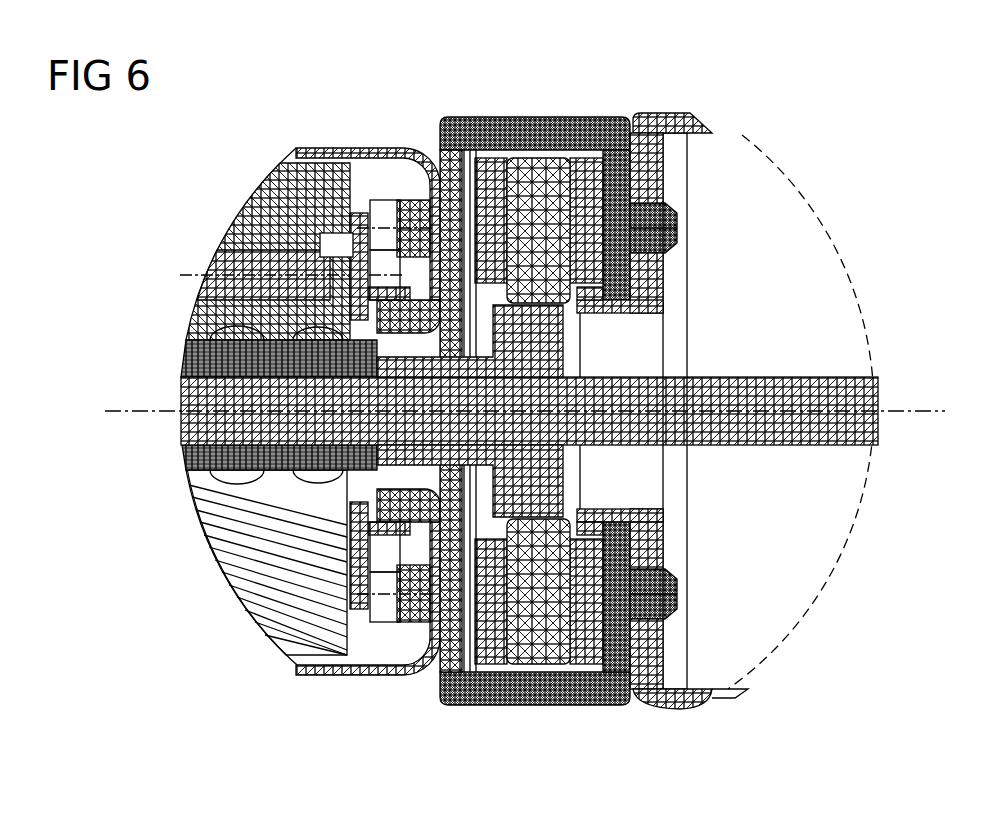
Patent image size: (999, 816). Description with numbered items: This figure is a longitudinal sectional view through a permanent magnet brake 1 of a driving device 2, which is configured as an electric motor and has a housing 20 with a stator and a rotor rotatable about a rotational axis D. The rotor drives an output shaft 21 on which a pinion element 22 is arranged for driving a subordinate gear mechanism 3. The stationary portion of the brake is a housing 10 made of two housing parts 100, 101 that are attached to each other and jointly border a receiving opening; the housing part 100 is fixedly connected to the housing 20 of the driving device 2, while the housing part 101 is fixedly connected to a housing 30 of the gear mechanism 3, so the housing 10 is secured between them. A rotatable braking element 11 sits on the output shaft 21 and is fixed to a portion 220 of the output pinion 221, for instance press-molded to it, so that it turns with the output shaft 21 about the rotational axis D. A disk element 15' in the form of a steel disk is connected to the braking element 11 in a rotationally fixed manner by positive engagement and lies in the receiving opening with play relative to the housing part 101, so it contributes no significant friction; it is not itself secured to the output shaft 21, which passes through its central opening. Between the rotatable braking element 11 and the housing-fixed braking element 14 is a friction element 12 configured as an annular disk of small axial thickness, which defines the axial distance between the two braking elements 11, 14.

The permanent magnet brake 1 is at (545, 353).
The driving device 2 is at (822, 195).
The gear mechanism 3 is at (267, 410).
The housing 10 is at (545, 361).
The braking element 11 is at (557, 177).
The friction element 12 is at (660, 170).
The braking element 14 is at (628, 122).
The disk element 15' is at (485, 364).
The housing 20 is at (697, 695).
The output shaft 21 is at (853, 383).
The pinion element 22 is at (213, 350).
The housing 30 is at (347, 675).
The housing part 100 is at (601, 117).
The housing part 101 is at (442, 116).
The portion 220 is at (530, 503).
The output pinion 221 is at (193, 523).
The rotational axis D is at (106, 413).